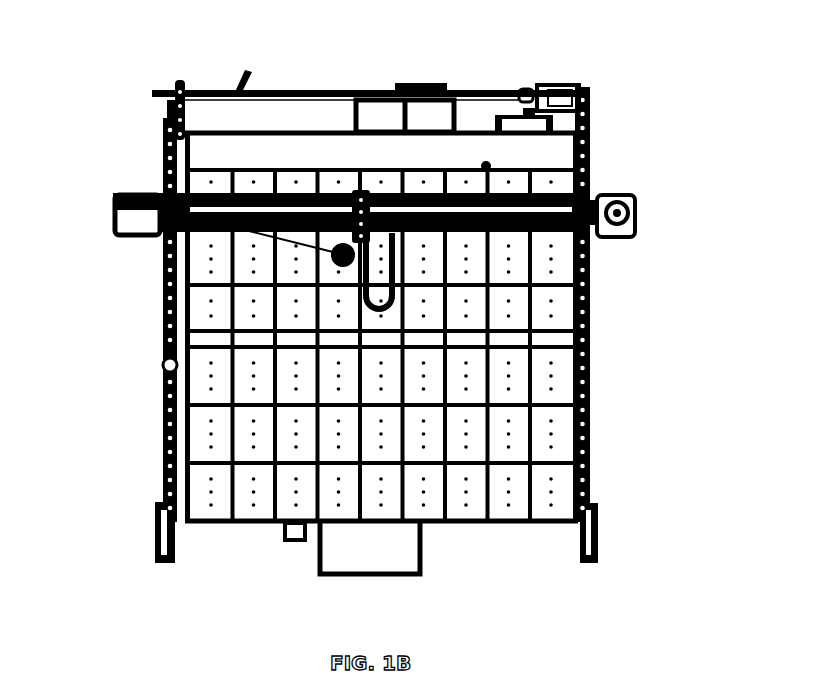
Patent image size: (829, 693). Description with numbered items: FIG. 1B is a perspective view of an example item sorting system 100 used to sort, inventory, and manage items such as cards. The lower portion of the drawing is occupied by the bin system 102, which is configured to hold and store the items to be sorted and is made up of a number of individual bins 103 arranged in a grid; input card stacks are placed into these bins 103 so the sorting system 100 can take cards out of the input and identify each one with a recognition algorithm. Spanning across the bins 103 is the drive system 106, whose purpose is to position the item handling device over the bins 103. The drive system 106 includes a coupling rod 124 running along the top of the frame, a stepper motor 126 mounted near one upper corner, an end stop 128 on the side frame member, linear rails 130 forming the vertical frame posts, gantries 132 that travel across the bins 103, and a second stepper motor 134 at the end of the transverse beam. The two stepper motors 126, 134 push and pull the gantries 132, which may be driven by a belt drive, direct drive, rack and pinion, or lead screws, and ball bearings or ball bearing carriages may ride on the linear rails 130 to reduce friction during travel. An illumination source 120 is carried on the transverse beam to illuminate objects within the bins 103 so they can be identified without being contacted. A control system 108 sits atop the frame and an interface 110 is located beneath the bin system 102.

The sorting system 100 is at (686, 632).
The bin system 102 is at (165, 445).
The bins 103 is at (540, 423).
The drive system 106 is at (430, 276).
The control system 108 is at (334, 112).
The interface 110 is at (286, 557).
The illumination source 120 is at (143, 228).
The coupling rod 124 is at (222, 85).
The stepper motor 126 is at (568, 88).
The end stop 128 is at (606, 128).
The linear rails 130 is at (150, 333).
The gantries 132 is at (276, 190).
The stepper motor 134 is at (661, 212).